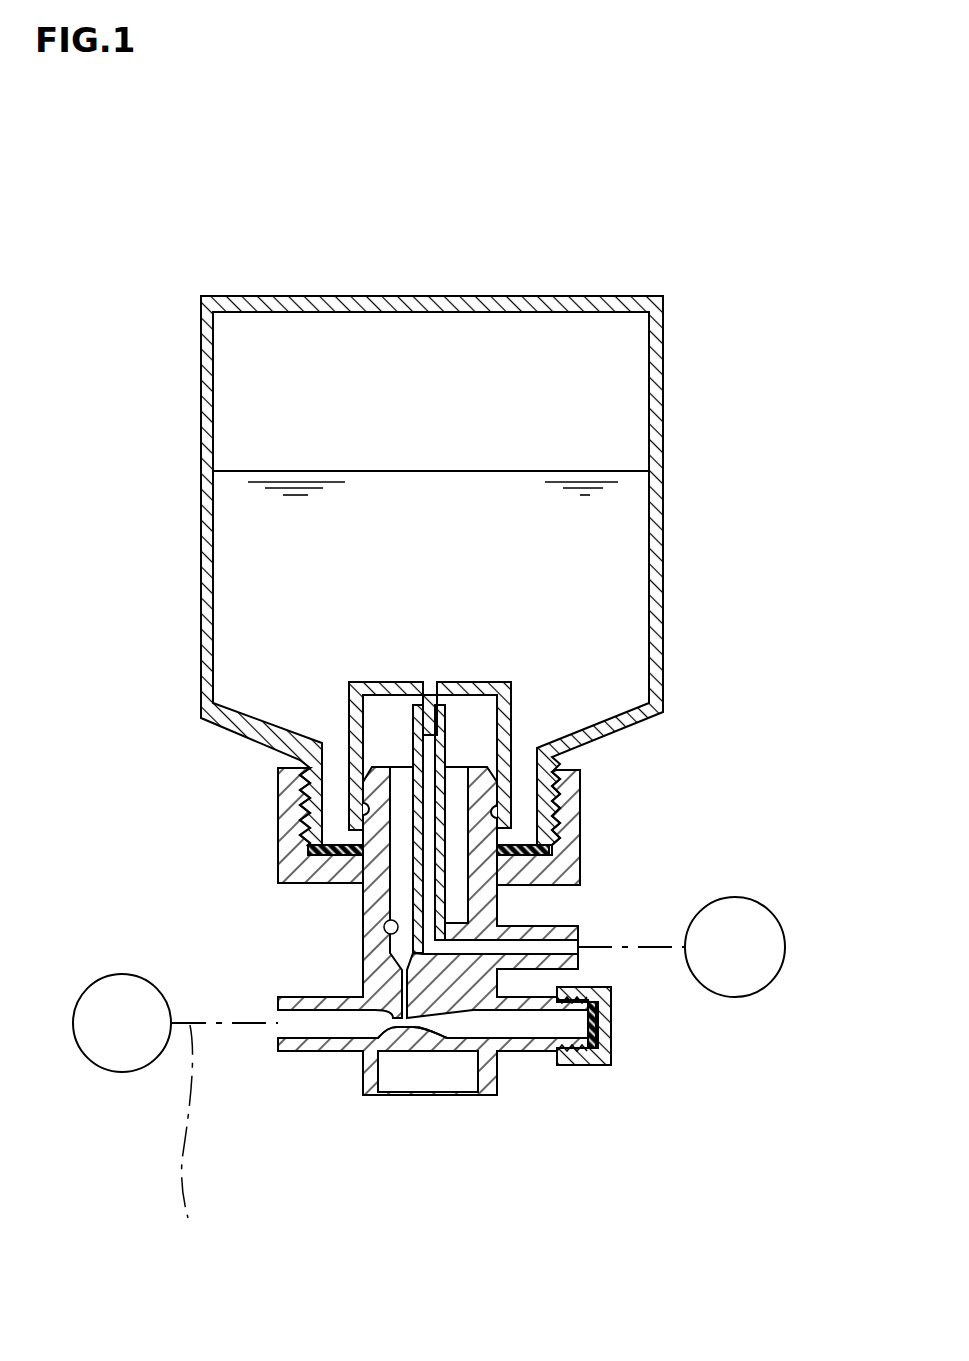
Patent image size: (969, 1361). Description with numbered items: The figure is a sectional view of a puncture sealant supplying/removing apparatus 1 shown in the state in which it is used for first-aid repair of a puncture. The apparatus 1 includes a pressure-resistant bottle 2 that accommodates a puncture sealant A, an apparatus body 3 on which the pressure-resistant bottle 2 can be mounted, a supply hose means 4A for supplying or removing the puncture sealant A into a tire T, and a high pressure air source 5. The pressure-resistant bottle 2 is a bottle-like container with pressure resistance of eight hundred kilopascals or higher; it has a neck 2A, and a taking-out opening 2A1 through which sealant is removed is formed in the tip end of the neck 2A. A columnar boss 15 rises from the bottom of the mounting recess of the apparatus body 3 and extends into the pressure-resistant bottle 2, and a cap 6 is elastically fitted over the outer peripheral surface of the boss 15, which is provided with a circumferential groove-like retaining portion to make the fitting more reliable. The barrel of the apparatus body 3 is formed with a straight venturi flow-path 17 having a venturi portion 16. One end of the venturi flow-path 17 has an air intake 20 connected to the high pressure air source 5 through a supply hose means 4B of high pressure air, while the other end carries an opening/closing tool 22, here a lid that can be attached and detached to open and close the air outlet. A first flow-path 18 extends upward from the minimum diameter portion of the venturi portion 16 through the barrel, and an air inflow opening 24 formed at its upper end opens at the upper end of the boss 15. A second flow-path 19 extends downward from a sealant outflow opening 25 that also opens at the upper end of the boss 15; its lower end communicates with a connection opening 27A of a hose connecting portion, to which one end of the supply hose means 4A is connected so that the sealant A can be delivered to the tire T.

The puncture sealant supplying/removing apparatus 1 is at (688, 292).
The pressure-resistant bottle 2 is at (577, 296).
The puncture sealant A is at (600, 471).
The cap 6 is at (499, 716).
The sealant outflow opening 25 is at (430, 700).
The apparatus body 3 is at (252, 863).
The air inflow opening 24 is at (402, 782).
The columnar boss 15 is at (475, 768).
The second flow-path 19 is at (542, 950).
The connection opening 27A is at (588, 940).
The supply hose means 4A is at (668, 948).
The tire T is at (737, 997).
The neck 2A is at (330, 787).
The taking-out opening 2A1 is at (338, 823).
The first flow-path 18 is at (385, 930).
The high pressure air source 5 is at (115, 1072).
The supply hose means of high pressure air 4B is at (190, 1137).
The air intake 20 is at (267, 1047).
The venturi flow-path 17 is at (310, 1028).
The venturi portion 16 is at (403, 1040).
The opening/closing tool 22 is at (618, 1050).